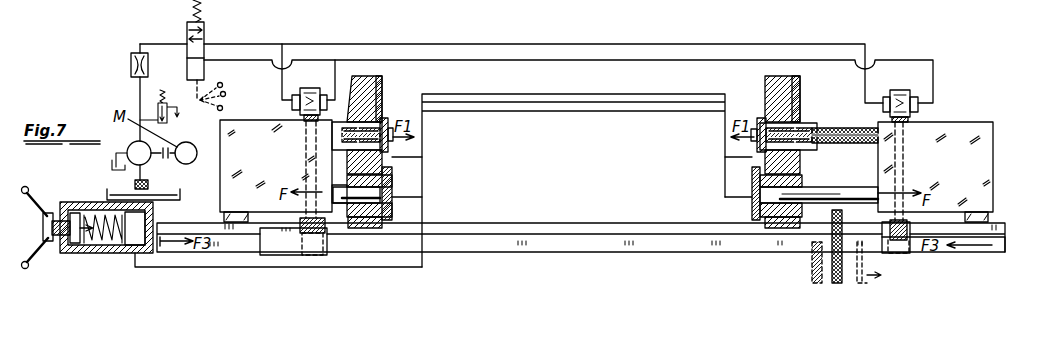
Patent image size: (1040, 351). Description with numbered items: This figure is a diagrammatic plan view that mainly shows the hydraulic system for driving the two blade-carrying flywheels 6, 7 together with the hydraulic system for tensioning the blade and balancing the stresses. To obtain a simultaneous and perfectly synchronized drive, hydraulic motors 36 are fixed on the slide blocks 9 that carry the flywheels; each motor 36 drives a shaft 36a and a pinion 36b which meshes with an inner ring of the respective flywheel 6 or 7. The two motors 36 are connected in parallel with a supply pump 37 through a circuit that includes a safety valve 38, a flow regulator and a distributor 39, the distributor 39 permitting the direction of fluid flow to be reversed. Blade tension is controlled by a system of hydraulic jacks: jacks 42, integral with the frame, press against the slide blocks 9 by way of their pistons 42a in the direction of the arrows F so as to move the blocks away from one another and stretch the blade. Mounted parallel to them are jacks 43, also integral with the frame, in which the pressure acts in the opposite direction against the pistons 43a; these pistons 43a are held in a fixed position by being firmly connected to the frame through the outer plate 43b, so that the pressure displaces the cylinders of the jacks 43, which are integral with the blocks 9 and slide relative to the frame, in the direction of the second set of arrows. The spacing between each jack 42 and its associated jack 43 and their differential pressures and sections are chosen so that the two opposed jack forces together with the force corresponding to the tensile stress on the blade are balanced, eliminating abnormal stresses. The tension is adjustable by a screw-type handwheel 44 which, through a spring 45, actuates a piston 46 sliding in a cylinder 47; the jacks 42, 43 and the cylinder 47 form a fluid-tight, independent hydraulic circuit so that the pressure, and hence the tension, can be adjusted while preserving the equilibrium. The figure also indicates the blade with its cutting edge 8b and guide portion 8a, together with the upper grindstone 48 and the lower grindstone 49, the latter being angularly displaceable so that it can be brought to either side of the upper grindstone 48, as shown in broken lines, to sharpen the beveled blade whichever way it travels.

The flywheel 6 is at (260, 228).
The flywheel 7 is at (992, 255).
The guide rail 8a is at (541, 244).
The cutting edge 8b is at (460, 258).
The slide block 9 is at (245, 125).
The hydraulic motor 36 is at (310, 88).
The shaft 36a is at (300, 210).
The pinion 36b is at (303, 222).
The supply pump 37 is at (134, 146).
The safety valve 38 is at (134, 55).
The distributor 39 is at (187, 34).
The hydraulic jack 42 is at (385, 210).
The piston 42a is at (338, 203).
The hydraulic jack 43 is at (350, 115).
The piston 43a is at (795, 120).
The outer plate 43b is at (382, 117).
The screw-type handwheel 44 is at (45, 243).
The spring 45 is at (86, 246).
The piston 46 is at (110, 246).
The cylinder 47 is at (128, 246).
The upper grindstone 48 is at (835, 283).
The lower grindstone 49 is at (812, 276).